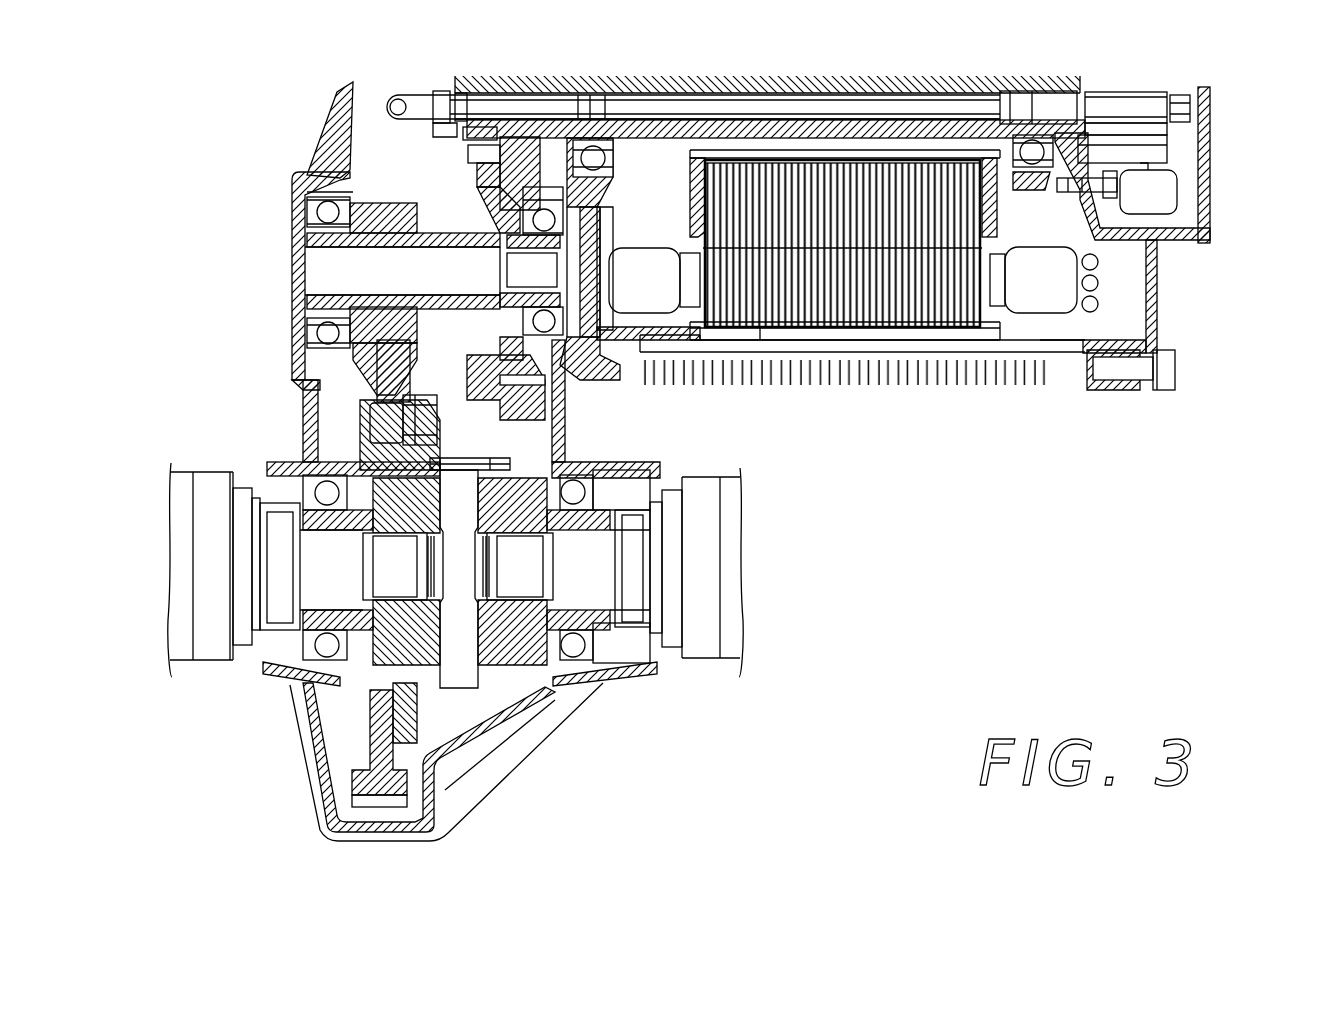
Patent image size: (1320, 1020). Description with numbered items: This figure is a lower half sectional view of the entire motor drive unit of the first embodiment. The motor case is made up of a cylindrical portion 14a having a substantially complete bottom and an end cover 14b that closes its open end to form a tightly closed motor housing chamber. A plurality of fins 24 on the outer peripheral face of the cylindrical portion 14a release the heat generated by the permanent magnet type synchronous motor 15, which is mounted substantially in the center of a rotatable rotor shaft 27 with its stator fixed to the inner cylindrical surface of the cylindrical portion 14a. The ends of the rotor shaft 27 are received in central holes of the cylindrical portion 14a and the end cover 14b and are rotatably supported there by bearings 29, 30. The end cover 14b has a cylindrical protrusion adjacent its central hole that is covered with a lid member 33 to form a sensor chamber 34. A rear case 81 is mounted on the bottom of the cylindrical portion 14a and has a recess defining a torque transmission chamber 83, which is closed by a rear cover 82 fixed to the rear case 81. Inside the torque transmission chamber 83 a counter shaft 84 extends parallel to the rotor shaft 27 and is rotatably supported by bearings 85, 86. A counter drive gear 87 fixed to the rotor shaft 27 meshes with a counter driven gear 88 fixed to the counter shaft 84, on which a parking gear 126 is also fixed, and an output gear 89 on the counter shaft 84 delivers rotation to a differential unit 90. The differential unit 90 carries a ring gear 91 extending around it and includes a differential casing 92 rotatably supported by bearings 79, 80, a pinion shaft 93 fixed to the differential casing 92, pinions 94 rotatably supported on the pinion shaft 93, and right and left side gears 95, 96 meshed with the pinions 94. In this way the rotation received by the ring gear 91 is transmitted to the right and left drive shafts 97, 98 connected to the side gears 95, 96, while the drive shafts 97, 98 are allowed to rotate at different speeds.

The rotor shaft 27 is at (822, 86).
The bearing 29 is at (616, 118).
The bearing 30 is at (1027, 130).
The lid member 33 is at (1214, 175).
The sensor chamber 34 is at (1185, 240).
The cylindrical portion 14a is at (1107, 354).
The end cover 14b is at (1160, 292).
The permanent magnet type synchronous motor 15 is at (1050, 320).
The fins 24 is at (880, 387).
The bearing 86 is at (550, 222).
The counter drive gear 87 is at (497, 128).
The counter driven gear 88 is at (563, 398).
The differential unit 90 is at (530, 466).
The parking gear 126 is at (481, 393).
The torque transmission chamber 83 is at (380, 178).
The counter shaft 84 is at (343, 270).
The bearing 85 is at (312, 193).
The rear cover 82 is at (307, 170).
The output gear 89 is at (383, 213).
The right side gear 95 is at (398, 510).
The left side gear 96 is at (516, 510).
The right drive shaft 97 is at (212, 668).
The left drive shaft 98 is at (700, 638).
The bearing 79 is at (288, 678).
The bearing 80 is at (592, 681).
The pinions 94 is at (337, 692).
The differential casing 92 is at (553, 714).
The rear case 81 is at (497, 714).
The pinion shaft 93 is at (453, 674).
The ring gear 91 is at (368, 782).